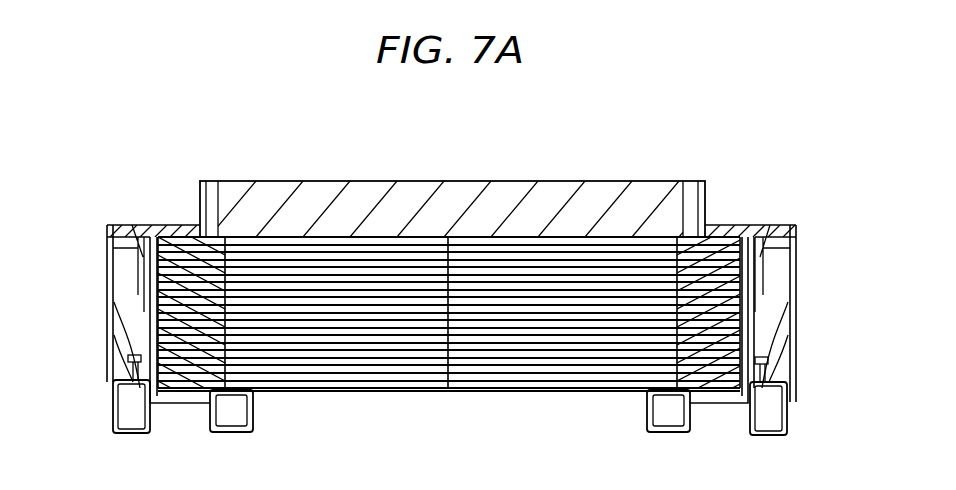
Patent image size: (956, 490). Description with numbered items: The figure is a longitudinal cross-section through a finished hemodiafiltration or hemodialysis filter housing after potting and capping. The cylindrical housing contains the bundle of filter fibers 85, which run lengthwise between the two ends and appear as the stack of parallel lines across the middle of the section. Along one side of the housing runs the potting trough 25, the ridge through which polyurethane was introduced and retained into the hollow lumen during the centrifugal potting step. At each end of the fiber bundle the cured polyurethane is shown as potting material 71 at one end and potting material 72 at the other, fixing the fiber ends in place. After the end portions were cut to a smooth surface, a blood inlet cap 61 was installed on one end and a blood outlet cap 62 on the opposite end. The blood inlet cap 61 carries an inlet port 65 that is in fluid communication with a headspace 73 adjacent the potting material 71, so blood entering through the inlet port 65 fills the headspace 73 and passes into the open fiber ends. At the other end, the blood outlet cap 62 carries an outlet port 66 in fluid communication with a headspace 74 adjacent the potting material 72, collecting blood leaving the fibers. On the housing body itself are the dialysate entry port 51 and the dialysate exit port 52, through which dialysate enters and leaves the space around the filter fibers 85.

The potting trough 25 is at (455, 190).
The blood inlet cap 61 is at (765, 237).
The blood outlet cap 62 is at (143, 225).
The potting material 71 is at (717, 243).
The potting material 72 is at (183, 377).
The headspace 73 is at (752, 267).
The headspace 74 is at (157, 270).
The filter fibers 85 is at (535, 360).
The dialysate entry port 51 is at (254, 425).
The dialysate exit port 52 is at (648, 425).
The inlet port 65 is at (788, 425).
The outlet port 66 is at (113, 418).